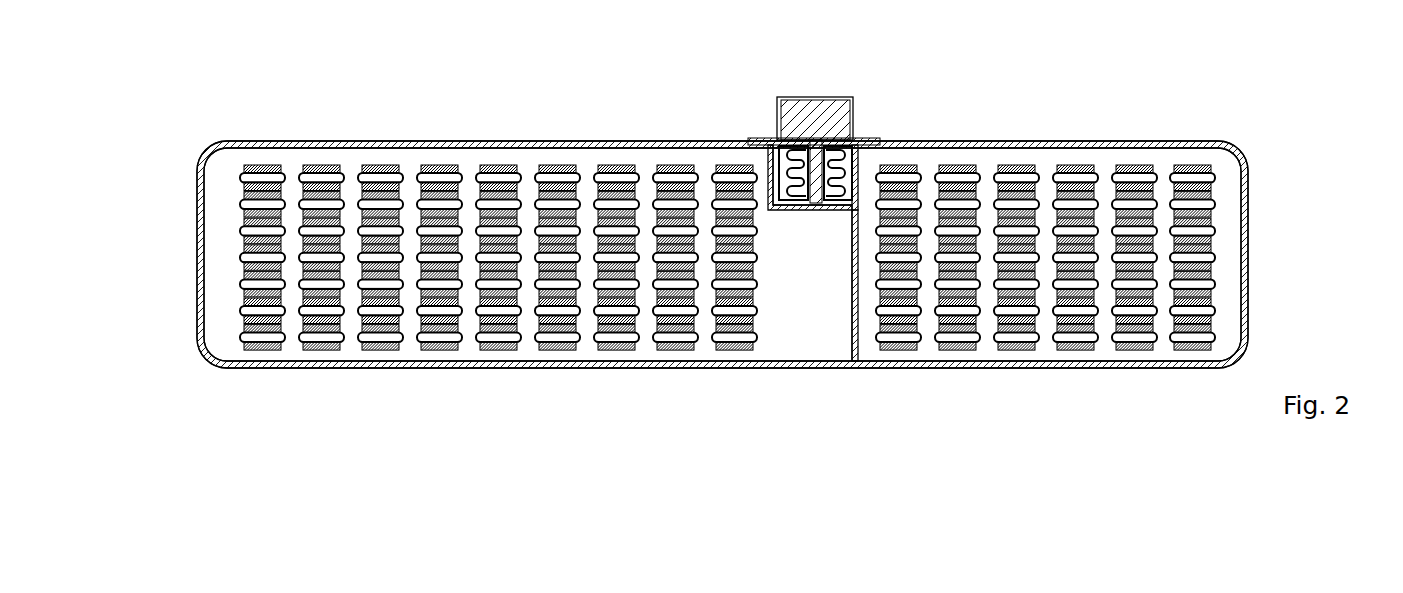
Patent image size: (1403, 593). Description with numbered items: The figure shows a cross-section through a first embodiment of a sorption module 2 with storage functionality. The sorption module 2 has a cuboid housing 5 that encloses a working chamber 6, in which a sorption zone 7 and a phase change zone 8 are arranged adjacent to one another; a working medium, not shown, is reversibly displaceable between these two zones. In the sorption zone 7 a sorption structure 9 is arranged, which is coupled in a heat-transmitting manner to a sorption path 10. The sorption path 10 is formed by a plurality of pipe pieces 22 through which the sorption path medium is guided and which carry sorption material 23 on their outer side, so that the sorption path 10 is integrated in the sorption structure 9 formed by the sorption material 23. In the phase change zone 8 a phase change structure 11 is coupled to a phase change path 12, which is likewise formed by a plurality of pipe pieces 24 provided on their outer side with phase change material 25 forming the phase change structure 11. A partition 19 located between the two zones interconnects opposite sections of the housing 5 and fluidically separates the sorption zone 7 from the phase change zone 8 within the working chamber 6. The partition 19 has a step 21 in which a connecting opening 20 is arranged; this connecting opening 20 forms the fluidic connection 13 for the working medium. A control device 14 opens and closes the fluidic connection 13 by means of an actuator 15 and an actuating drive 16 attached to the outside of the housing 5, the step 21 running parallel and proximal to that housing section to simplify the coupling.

The sorption module 2 is at (1258, 130).
The housing 5 is at (599, 134).
The working chamber 6 is at (802, 322).
The sorption zone 7 is at (465, 158).
The phase change zone 8 is at (1045, 158).
The sorption structure 9 is at (232, 203).
The sorption path 10 is at (240, 258).
The phase change structure 11 is at (1221, 202).
The phase change path 12 is at (1200, 257).
The fluidic connection 13 is at (796, 210).
The control device 14 is at (866, 107).
The actuator 15 is at (788, 181).
The actuating drive 16 is at (812, 112).
The partition 19 is at (846, 334).
The connecting opening 20 is at (813, 212).
The step 21 is at (858, 205).
The pipe pieces 22 is at (240, 307).
The sorption material 23 is at (240, 337).
The pipe pieces 24 is at (1210, 307).
The phase change material 25 is at (1212, 340).